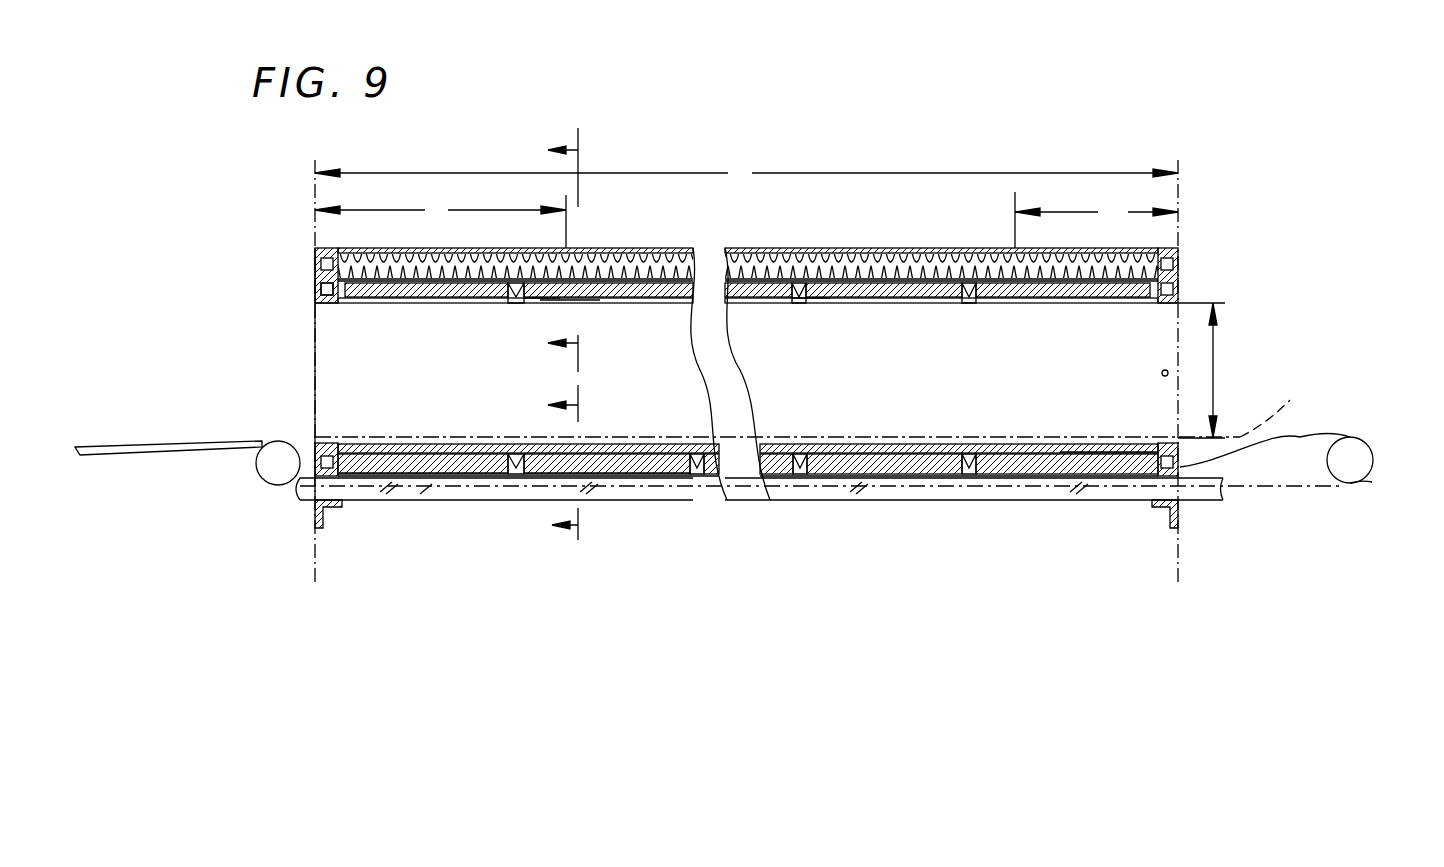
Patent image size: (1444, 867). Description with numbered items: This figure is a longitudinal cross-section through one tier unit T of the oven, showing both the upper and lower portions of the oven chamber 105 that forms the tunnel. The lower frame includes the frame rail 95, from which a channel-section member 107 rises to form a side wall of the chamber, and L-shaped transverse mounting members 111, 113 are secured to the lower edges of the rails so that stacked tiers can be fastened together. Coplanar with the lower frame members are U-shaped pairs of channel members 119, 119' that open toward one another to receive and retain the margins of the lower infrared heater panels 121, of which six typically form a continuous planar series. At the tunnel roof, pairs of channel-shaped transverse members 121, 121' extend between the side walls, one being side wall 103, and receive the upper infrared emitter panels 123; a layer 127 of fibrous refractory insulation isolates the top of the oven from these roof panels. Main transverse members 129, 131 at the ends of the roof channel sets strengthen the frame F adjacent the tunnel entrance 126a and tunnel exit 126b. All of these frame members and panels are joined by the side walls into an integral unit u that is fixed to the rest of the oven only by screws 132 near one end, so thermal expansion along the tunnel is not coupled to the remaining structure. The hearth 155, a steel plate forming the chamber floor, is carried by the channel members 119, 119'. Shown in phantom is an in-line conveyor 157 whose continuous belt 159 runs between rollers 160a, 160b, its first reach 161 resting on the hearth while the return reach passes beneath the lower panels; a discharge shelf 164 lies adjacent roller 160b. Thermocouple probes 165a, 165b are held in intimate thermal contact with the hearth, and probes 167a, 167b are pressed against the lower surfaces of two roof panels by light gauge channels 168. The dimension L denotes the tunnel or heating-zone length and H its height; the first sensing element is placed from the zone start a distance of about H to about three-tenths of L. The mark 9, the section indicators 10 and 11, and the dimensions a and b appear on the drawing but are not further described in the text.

The frame 9 is at (302, 528).
The section line 10 is at (578, 248).
The section line 11 is at (578, 465).
The frame rail 95 is at (1185, 520).
The side wall 103 is at (330, 362).
The oven chamber 105 is at (1255, 447).
The channel-section member 107 is at (303, 440).
The L-shaped transverse mounting member 111 is at (335, 525).
The L-shaped transverse mounting member 113 is at (1165, 512).
The channel member 119 is at (748, 531).
The channel member 119' is at (692, 534).
The heater panel 121 is at (813, 432).
The channel-shaped transverse member 121' is at (690, 332).
The infrared emitter panel 123 is at (440, 297).
The tunnel entrance 126a is at (1182, 300).
The tunnel exit 126b is at (318, 318).
The layer of fibrous thermal insulation 127 is at (642, 250).
The main transverse member 129 is at (320, 300).
The main transverse member 131 is at (1190, 306).
The screw 132 is at (1164, 378).
The hearth 155 is at (840, 443).
The conveyor 157 is at (1368, 442).
The continuous belt 159 is at (1284, 406).
The roller 160a is at (1362, 484).
The roller 160b is at (265, 480).
The first reach 161 is at (1065, 443).
The shelf 164 is at (150, 452).
The temperature sensing element 165a is at (1015, 447).
The temperature sensing element 165b is at (565, 445).
The temperature sensing element 167a is at (1070, 303).
The temperature sensing element 167b is at (560, 300).
The light gauge channel 168 is at (590, 303).
The frame F is at (320, 283).
The length of the tunnel L is at (746, 173).
The dimension a is at (1096, 220).
The dimension b is at (440, 221).
The tier unit T is at (1203, 252).
The height of the tunnel H is at (1201, 370).
The integral unit u is at (1246, 388).